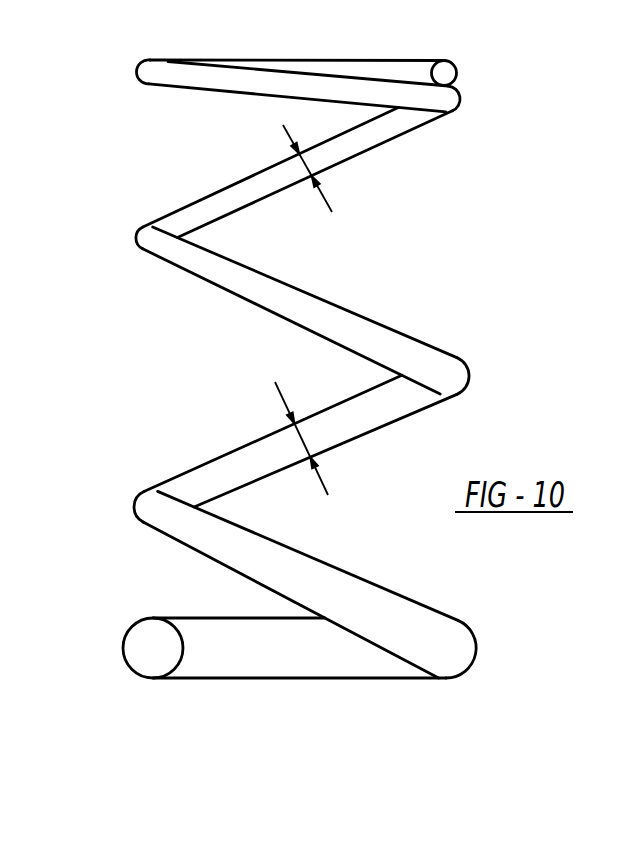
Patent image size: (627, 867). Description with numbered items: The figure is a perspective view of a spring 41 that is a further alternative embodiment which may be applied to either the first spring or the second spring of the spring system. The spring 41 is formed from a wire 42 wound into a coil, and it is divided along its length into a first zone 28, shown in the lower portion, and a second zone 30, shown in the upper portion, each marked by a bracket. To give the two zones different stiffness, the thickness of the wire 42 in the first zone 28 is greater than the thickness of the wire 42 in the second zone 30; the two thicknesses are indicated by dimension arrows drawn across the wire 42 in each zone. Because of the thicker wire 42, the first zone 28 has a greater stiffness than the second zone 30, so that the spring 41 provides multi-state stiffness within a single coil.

The first zone 28 is at (107, 667).
The second zone 30 is at (107, 72).
The spring 41 is at (310, 369).
The wire 42 is at (403, 122).